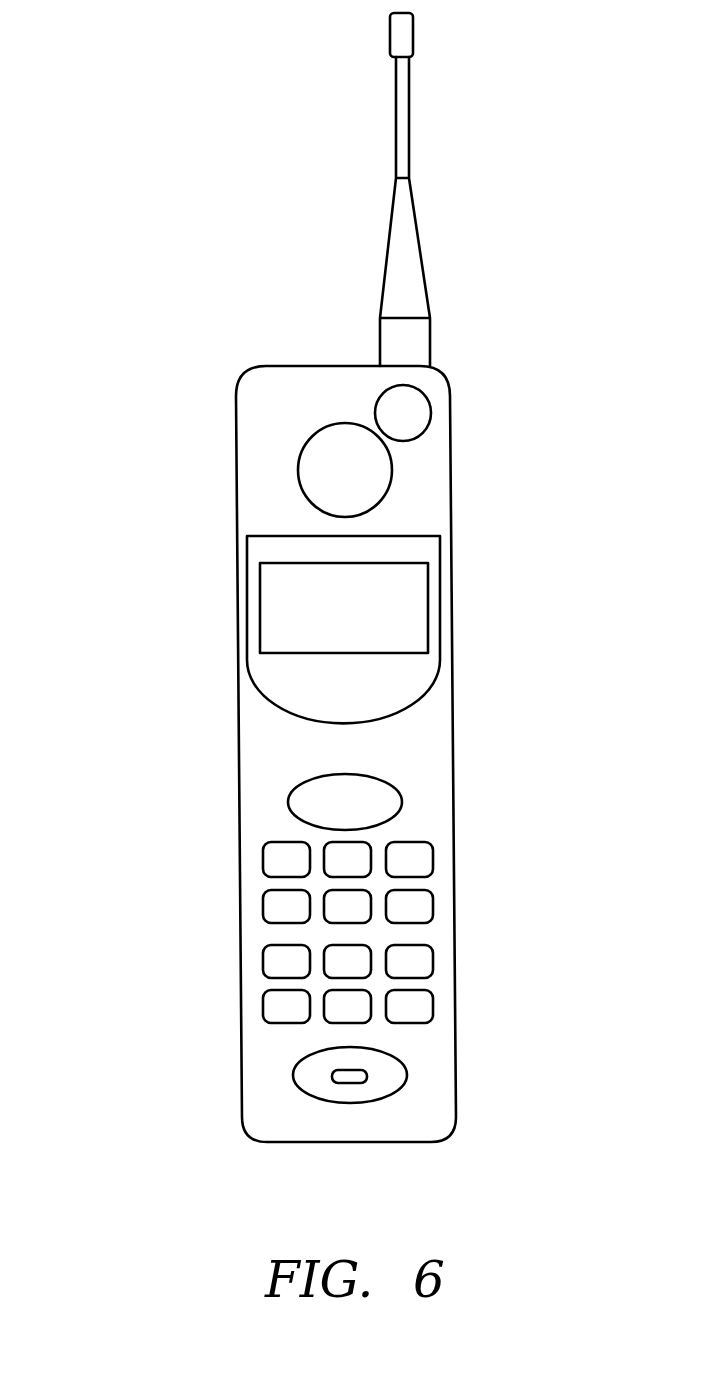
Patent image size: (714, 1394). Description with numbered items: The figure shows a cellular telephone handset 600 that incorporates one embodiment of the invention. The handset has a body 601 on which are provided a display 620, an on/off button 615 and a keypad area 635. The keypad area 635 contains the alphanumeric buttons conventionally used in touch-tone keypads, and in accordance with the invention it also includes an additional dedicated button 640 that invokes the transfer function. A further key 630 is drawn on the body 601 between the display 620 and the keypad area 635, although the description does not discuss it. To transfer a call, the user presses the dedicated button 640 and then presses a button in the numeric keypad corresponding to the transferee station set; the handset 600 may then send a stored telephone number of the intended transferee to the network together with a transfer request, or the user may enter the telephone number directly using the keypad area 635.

The cellular telephone handset 600 is at (300, 577).
The body 601 is at (236, 470).
The on/off button 615 is at (431, 413).
The display 620 is at (262, 606).
The function key 630 is at (289, 802).
The keypad area 635 is at (280, 932).
The dedicated button 640 is at (293, 1075).